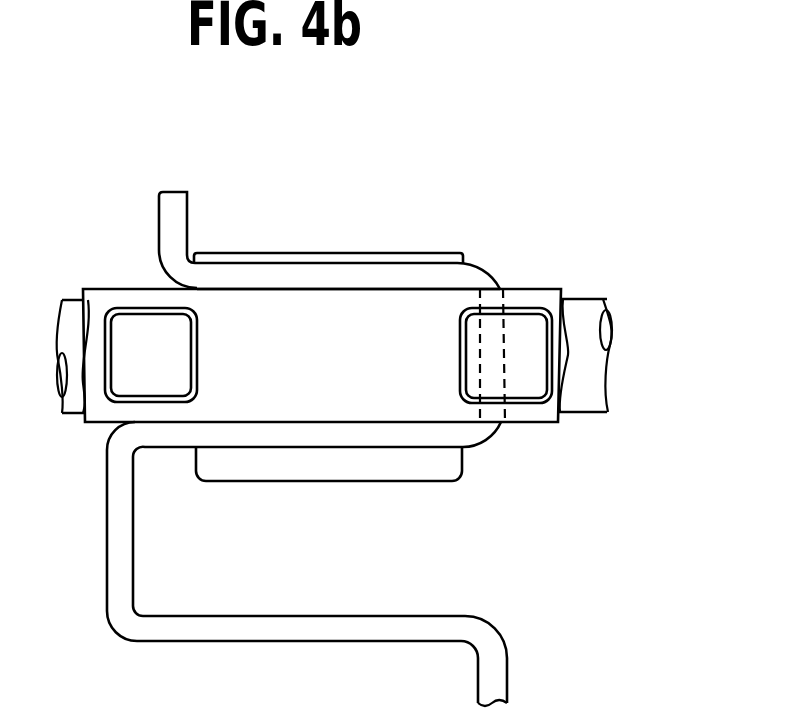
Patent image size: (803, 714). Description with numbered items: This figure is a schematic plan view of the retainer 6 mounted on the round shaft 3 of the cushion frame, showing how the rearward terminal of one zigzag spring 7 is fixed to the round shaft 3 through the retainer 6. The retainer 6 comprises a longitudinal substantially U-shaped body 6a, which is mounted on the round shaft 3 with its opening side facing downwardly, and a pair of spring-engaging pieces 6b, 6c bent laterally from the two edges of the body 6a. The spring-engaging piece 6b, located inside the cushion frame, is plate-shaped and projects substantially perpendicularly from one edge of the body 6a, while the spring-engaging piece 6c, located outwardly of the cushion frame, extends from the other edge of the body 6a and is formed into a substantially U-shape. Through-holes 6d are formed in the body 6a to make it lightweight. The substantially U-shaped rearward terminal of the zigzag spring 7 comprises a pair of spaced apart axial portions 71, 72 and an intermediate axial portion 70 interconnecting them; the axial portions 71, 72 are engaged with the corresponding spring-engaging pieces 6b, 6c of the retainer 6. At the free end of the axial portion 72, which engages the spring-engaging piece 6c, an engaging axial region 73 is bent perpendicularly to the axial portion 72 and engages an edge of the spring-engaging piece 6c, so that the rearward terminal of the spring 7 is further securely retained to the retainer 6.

The round shaft 3 is at (583, 320).
The retainer 6 is at (341, 363).
The substantially U-shaped body 6a is at (373, 311).
The spring-engaging piece 6b is at (397, 475).
The spring-engaging piece 6c is at (258, 262).
The through-holes 6d is at (107, 362).
The zigzag spring 7 is at (265, 615).
The intermediate axial portion 70 is at (486, 423).
The axial portion 71 is at (308, 433).
The axial portion 72 is at (425, 278).
The engaging axial region 73 is at (172, 222).